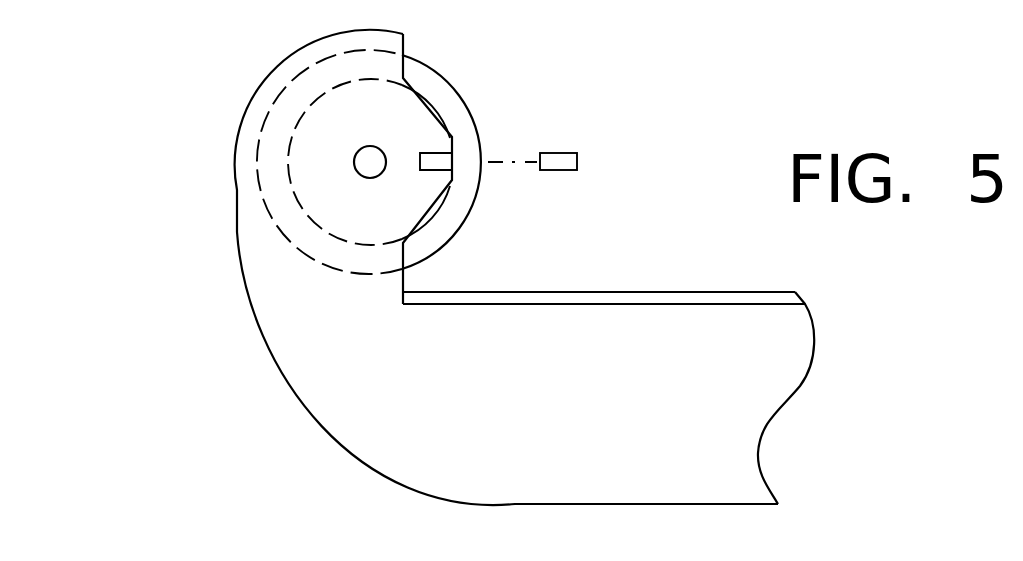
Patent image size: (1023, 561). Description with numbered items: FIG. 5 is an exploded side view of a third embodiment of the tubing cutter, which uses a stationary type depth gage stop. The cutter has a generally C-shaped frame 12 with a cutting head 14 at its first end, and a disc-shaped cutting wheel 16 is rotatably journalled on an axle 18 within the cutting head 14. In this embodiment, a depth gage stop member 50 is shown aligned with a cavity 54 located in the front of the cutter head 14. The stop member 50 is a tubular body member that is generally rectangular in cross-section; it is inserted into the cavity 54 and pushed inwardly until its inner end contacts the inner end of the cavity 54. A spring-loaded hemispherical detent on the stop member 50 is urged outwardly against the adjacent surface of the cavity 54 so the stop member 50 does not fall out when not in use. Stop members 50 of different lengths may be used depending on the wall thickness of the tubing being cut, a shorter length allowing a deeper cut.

The C-shaped frame 12 is at (344, 446).
The cutting head 14 is at (245, 107).
The cutting wheel 16 is at (471, 92).
The axle 18 is at (357, 177).
The depth gage stop member 50 is at (558, 152).
The cavity 54 is at (441, 173).